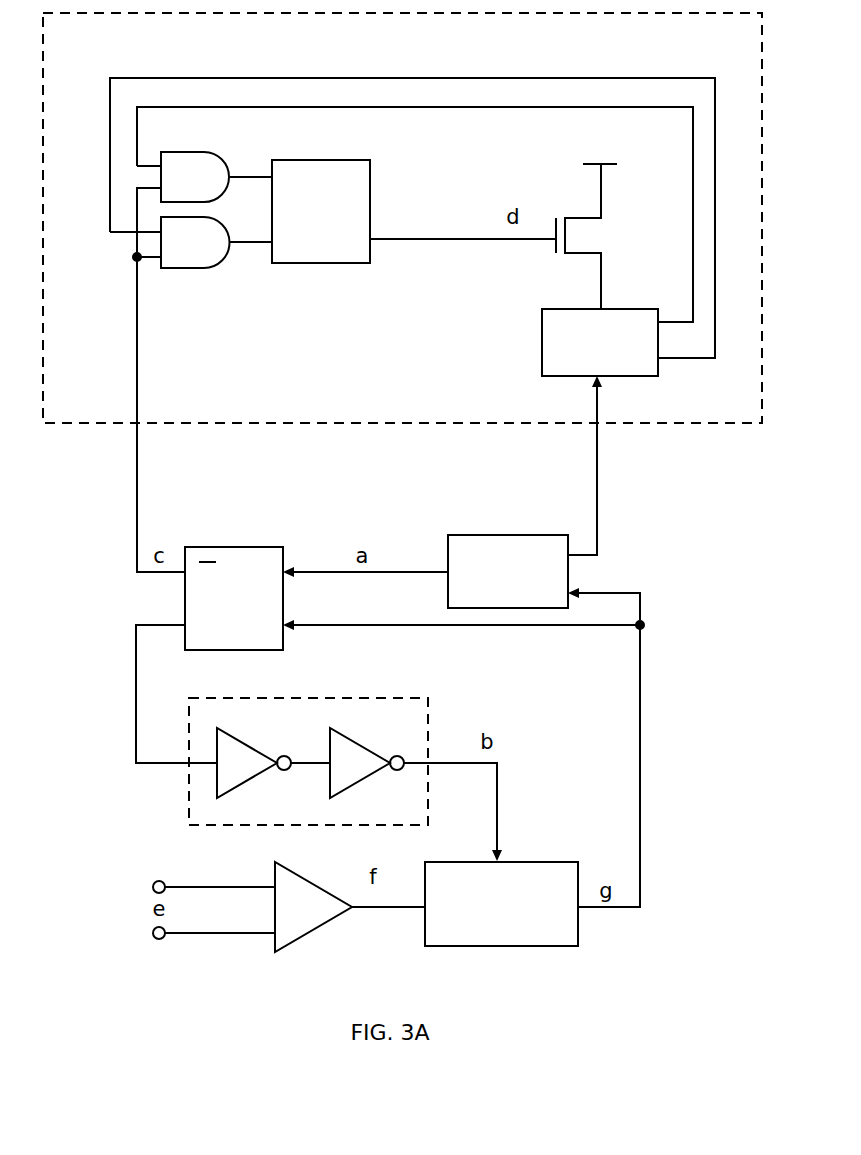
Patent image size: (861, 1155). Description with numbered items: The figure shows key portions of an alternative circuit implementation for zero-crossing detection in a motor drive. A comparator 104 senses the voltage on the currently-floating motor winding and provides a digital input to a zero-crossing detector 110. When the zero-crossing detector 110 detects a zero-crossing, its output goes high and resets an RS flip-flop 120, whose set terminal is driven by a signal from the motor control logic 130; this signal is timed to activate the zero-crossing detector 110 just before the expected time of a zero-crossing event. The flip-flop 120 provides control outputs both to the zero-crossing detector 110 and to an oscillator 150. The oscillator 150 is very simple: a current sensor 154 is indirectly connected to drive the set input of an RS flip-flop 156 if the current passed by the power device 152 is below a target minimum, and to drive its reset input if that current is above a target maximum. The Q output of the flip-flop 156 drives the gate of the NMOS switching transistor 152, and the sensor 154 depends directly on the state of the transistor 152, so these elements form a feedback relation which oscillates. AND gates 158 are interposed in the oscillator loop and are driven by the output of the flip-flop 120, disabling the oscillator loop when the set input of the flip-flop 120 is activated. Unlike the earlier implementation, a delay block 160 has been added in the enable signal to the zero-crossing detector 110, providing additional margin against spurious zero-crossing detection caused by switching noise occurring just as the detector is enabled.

The comparator 104 is at (288, 919).
The zero-crossing detector 110 is at (487, 930).
The RS flip-flop 120 is at (221, 612).
The motor control logic 130 is at (494, 602).
The oscillator 150 is at (686, 425).
The NMOS switching transistor 152 is at (613, 228).
The current sensor 154 is at (586, 372).
The RS flip-flop 156 is at (306, 222).
The AND gates 158 is at (193, 287).
The delay block 160 is at (189, 816).